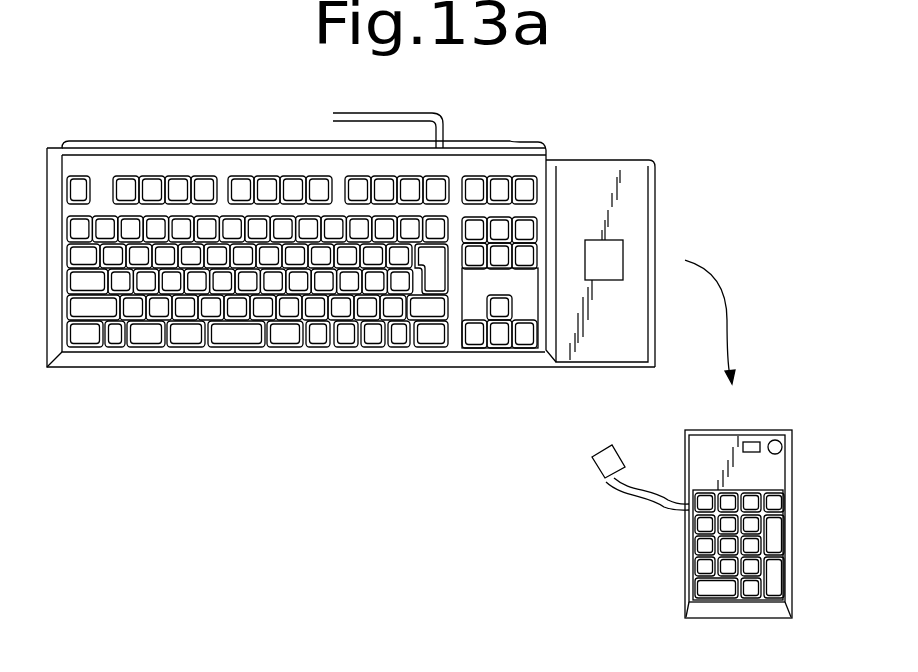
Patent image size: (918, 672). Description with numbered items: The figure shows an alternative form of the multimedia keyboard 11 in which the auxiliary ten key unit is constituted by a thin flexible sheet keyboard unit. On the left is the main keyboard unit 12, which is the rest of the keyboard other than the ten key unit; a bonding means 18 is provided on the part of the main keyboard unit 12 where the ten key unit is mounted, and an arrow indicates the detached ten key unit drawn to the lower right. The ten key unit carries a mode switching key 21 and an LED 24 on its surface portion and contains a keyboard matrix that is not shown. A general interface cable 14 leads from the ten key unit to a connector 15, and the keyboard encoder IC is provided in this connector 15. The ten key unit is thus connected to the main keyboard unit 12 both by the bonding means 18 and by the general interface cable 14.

The multimedia keyboard 11 is at (331, 380).
The main keyboard unit 12 is at (158, 367).
The bonding means 18 is at (603, 240).
The general interface cable 14 is at (655, 507).
The connector 15 is at (598, 473).
The mode switching key 21 is at (778, 440).
The LED 24 is at (750, 442).